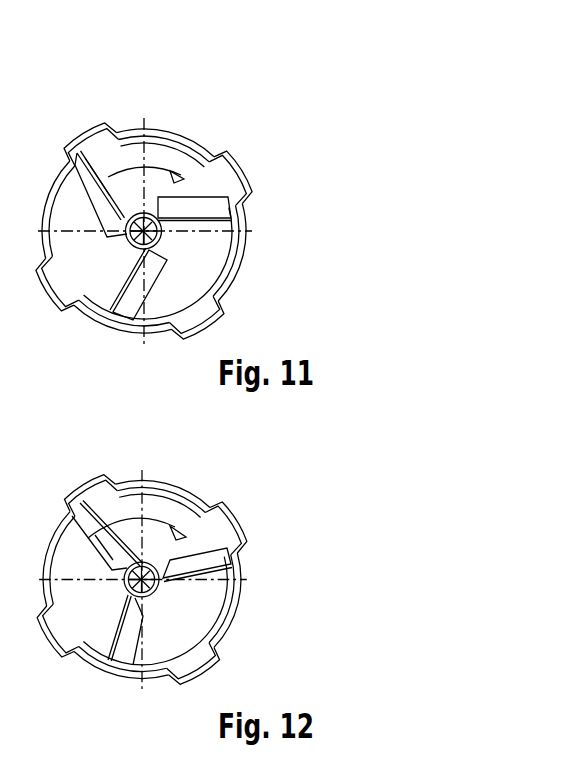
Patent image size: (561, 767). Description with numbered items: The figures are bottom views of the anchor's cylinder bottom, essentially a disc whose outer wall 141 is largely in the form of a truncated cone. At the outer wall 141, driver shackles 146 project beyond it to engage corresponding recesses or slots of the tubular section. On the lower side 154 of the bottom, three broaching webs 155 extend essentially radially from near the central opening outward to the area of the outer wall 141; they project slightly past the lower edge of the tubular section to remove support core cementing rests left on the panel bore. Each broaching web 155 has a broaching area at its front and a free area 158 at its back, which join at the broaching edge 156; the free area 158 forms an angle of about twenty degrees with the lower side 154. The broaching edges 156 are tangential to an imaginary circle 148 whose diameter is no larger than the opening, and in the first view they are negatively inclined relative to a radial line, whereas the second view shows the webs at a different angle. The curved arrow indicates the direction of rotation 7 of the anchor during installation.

The outer wall 141 is at (172, 137).
The driver shackle 146 is at (98, 140).
The imaginary circle 148 is at (162, 235).
The lower side 154 is at (95, 285).
The broaching web 155 is at (207, 202).
The broaching edge 156 is at (120, 143).
The free area 158 is at (85, 188).
The direction of rotation 7 is at (183, 178).